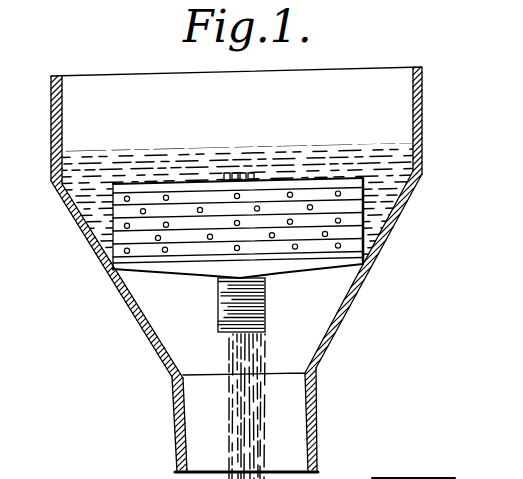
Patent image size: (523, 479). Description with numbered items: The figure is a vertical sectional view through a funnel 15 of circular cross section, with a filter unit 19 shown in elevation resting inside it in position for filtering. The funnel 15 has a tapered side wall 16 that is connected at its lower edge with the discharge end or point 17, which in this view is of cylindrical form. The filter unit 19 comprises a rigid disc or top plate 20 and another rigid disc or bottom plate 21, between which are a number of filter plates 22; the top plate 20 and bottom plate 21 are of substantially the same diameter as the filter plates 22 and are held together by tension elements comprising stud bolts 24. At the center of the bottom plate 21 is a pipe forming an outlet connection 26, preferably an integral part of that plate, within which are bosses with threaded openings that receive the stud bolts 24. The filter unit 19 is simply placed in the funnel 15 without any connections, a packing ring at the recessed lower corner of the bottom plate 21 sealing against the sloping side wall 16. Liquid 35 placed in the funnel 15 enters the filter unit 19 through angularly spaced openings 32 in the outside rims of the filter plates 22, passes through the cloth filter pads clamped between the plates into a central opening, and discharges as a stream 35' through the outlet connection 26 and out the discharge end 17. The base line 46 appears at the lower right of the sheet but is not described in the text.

The funnel 15 is at (421, 126).
The tapered side wall 16 is at (340, 325).
The discharge end or point 17 is at (317, 414).
The filter unit 19 is at (183, 163).
The top plate 20 is at (278, 183).
The bottom plate 21 is at (279, 271).
The filter plates 22 is at (383, 237).
The stud bolts 24 is at (228, 172).
The outlet connection 26 is at (218, 308).
The openings 32 is at (165, 251).
The liquid 35 is at (238, 133).
The stream 35' is at (266, 406).
The base line 46 is at (432, 478).